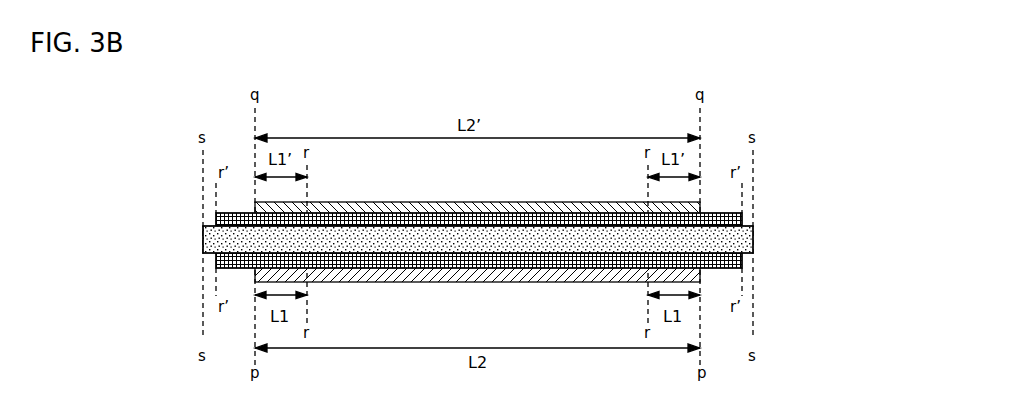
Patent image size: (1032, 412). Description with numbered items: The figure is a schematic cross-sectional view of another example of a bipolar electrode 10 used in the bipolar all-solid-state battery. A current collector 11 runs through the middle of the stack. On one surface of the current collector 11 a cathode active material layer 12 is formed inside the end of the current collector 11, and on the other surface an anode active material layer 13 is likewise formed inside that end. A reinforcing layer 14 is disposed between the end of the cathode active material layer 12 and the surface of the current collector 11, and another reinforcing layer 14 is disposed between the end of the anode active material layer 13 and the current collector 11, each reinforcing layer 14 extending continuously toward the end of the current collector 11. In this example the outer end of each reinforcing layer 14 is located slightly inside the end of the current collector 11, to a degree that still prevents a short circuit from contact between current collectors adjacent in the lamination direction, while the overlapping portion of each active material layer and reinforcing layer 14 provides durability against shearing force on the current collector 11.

The bipolar electrode 10 is at (552, 251).
The current collector 11 is at (730, 240).
The cathode active material layer 12 is at (698, 278).
The anode active material layer 13 is at (670, 206).
The reinforcing layer 14 is at (730, 261).